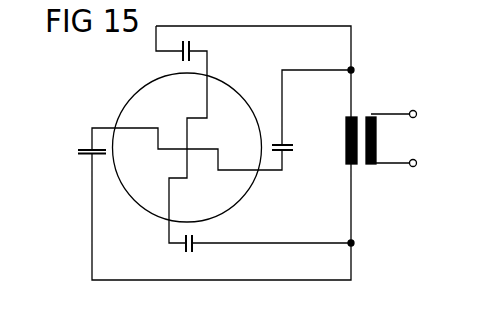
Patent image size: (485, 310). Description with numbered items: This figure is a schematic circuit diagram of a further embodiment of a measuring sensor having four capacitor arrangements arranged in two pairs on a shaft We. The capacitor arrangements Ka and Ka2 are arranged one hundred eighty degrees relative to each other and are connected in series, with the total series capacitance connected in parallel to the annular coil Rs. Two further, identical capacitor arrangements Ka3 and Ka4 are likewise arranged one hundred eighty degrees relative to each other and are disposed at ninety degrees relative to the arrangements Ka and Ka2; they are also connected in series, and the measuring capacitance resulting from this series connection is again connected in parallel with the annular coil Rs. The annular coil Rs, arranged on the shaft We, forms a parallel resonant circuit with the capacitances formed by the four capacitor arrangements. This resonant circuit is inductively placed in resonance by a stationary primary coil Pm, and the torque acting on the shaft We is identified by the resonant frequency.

The shaft We is at (237, 204).
The capacitor arrangement Ka is at (299, 155).
The capacitor arrangement Ka2 is at (76, 158).
The capacitor arrangement Ka3 is at (172, 61).
The capacitor arrangement Ka4 is at (183, 252).
The annular coil Rs is at (341, 140).
The stationary primary coil Pm is at (391, 139).